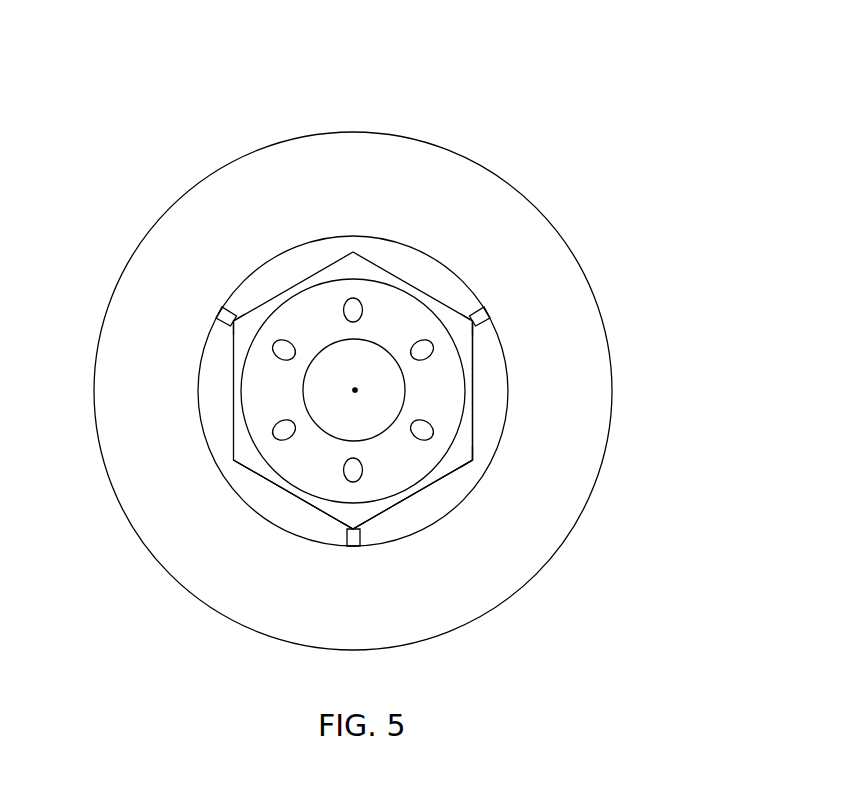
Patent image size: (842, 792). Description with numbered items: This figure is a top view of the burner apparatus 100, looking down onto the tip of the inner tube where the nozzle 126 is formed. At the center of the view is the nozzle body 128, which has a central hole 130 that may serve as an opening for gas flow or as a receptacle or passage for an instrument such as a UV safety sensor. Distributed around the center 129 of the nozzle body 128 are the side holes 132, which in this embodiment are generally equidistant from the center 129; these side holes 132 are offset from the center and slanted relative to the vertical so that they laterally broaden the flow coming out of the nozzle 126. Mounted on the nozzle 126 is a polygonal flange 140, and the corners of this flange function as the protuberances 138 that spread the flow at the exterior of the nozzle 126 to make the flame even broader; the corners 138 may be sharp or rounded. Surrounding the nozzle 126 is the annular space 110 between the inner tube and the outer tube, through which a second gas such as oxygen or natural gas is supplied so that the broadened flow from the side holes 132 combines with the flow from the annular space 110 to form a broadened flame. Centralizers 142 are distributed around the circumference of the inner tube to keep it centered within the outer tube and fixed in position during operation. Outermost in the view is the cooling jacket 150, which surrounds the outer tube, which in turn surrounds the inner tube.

The burner apparatus 100 is at (515, 170).
The annular space 110 is at (285, 515).
The nozzle 126 is at (319, 381).
The nozzle body 128 is at (396, 430).
The center 129 is at (356, 388).
The central hole 130 is at (323, 372).
The side holes 132 is at (352, 312).
The protuberances 138 is at (233, 320).
The polygonal flange 140 is at (467, 387).
The centralizers 142 is at (397, 563).
The cooling jacket 150 is at (353, 369).